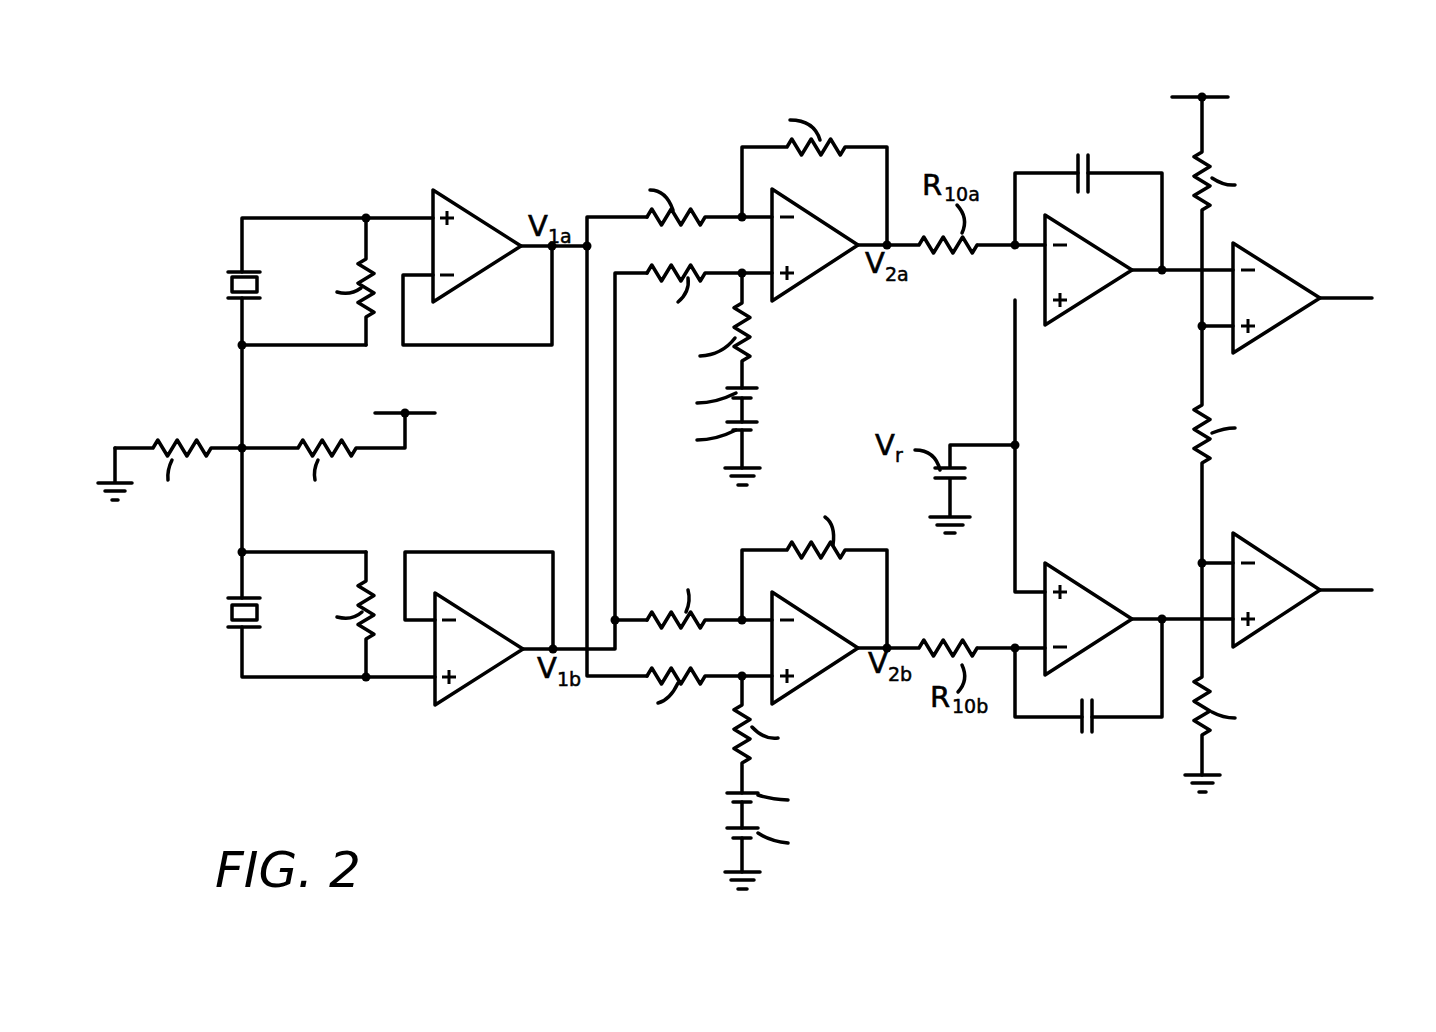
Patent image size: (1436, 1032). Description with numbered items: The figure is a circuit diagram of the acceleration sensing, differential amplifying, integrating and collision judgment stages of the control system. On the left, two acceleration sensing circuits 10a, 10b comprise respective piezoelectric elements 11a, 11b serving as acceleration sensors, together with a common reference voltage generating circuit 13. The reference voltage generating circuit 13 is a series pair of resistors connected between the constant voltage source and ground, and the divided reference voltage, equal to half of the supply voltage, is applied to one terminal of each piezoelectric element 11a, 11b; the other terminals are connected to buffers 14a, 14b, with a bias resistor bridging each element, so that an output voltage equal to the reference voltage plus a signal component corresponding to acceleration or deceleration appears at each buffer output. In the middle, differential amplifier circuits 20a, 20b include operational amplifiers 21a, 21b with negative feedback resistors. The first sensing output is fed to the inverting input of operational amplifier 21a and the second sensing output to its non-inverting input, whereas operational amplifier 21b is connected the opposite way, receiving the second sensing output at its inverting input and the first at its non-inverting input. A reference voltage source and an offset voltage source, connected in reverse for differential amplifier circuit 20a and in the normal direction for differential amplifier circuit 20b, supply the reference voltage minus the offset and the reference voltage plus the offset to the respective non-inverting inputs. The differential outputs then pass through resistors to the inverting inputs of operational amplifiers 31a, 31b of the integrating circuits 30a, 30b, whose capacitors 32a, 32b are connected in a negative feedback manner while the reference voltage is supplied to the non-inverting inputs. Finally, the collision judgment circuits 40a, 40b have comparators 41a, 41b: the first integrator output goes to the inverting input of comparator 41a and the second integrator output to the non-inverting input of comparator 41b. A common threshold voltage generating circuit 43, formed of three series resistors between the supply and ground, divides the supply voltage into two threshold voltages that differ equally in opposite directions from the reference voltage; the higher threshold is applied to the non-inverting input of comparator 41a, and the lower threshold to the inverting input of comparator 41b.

The acceleration sensing circuit 10a is at (348, 175).
The acceleration sensing circuit 10b is at (339, 716).
The piezoelectric element 11a is at (228, 282).
The piezoelectric element 11b is at (228, 612).
The reference voltage generating circuit 13 is at (175, 425).
The buffer 14a is at (463, 206).
The buffer 14b is at (467, 687).
The differential amplifier circuit 20a is at (690, 180).
The differential amplifier circuit 20b is at (693, 747).
The operational amplifier 21a is at (807, 277).
The operational amplifier 21b is at (808, 686).
The integrating circuit 30a is at (1044, 134).
The integrating circuit 30b is at (1051, 761).
The operational amplifier 31a is at (1082, 308).
The operational amplifier 31b is at (1078, 580).
The capacitor 32a is at (1092, 168).
The capacitor 32b is at (1095, 722).
The collision judgment circuit 40a is at (1312, 253).
The collision judgment circuit 40b is at (1312, 650).
The comparator 41a is at (1283, 322).
The comparator 41b is at (1283, 565).
The threshold voltage generating circuit 43 is at (1226, 743).